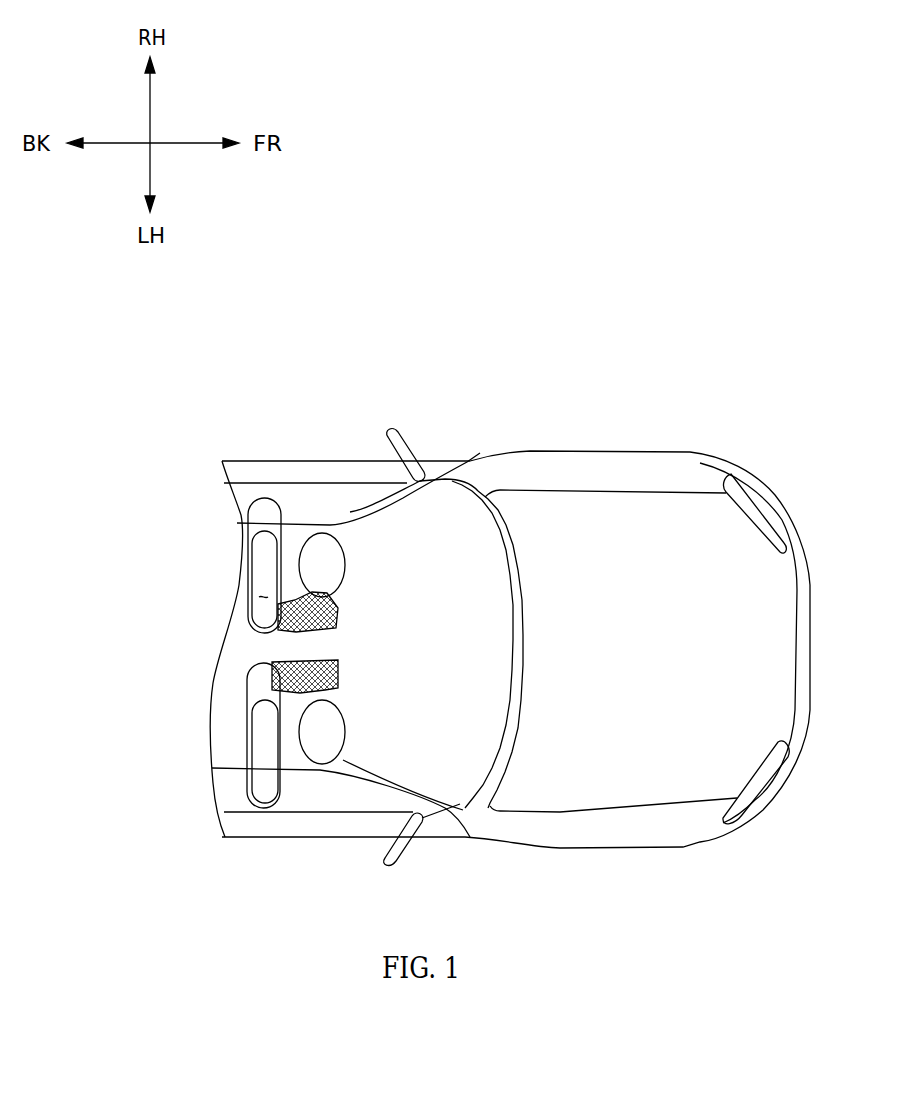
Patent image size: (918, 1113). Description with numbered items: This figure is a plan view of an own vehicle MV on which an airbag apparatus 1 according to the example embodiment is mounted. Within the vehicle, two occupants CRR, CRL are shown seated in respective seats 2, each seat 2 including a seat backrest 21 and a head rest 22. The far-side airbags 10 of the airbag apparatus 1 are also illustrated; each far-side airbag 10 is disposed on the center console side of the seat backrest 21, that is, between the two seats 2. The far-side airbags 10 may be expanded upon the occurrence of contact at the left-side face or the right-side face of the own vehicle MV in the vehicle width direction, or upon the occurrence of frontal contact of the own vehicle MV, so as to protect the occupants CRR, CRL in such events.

The airbag apparatus 1 is at (799, 143).
The seat 2 is at (258, 683).
The far-side airbag 10 is at (295, 628).
The seat backrest 21 is at (262, 494).
The head rest 22 is at (253, 570).
The occupant CRR is at (290, 500).
The occupant CRL is at (320, 778).
The own vehicle MV is at (554, 446).